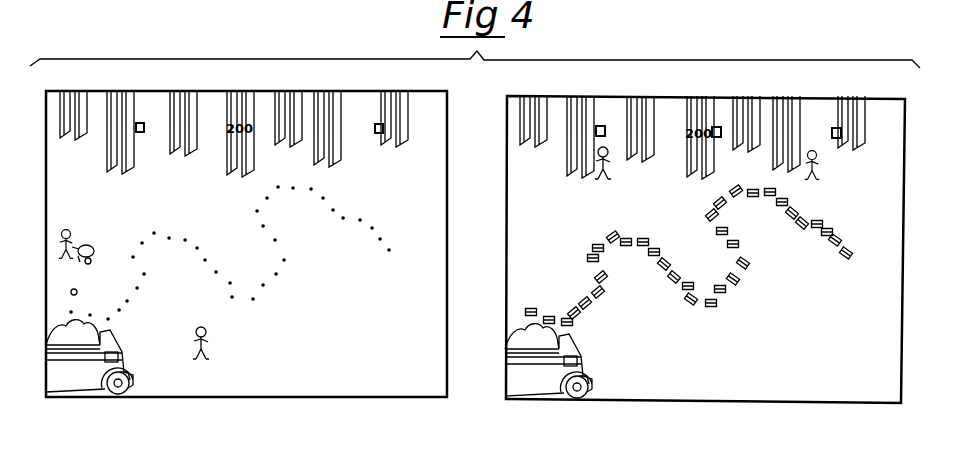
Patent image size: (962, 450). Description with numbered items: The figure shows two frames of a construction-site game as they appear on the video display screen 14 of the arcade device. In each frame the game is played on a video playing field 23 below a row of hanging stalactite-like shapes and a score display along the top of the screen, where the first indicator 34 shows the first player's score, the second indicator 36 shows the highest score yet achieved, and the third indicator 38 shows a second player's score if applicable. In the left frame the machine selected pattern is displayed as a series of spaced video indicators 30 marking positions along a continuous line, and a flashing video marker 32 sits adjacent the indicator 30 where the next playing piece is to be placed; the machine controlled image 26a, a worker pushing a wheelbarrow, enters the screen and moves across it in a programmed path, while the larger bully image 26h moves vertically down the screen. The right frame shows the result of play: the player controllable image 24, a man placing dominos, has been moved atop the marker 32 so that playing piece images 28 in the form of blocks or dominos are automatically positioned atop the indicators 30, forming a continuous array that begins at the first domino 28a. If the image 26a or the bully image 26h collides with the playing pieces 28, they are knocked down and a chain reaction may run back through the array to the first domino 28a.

The video display screen 14 is at (337, 383).
The video playing field 23 is at (791, 322).
The player controllable image 24 is at (822, 166).
The machine controlled image 26a is at (59, 231).
The bully image 26h is at (212, 338).
The playing piece images 28 is at (672, 281).
The first domino 28a is at (531, 309).
The video indicators 30 is at (142, 241).
The flashing video marker 32 is at (77, 292).
The first indicator 34 is at (600, 125).
The second indicator 36 is at (717, 127).
The third indicator 38 is at (836, 128).